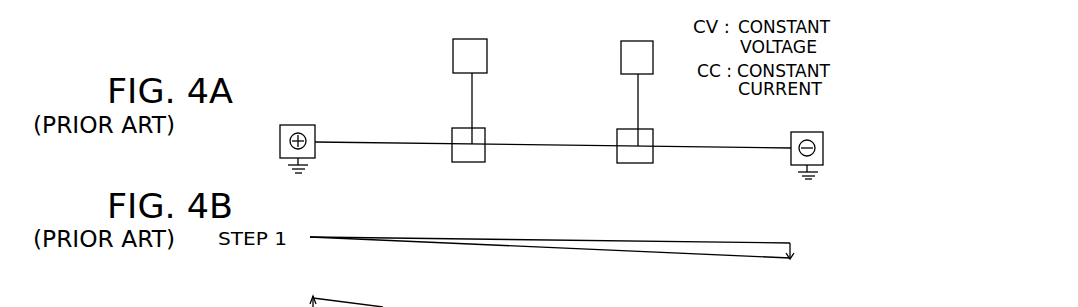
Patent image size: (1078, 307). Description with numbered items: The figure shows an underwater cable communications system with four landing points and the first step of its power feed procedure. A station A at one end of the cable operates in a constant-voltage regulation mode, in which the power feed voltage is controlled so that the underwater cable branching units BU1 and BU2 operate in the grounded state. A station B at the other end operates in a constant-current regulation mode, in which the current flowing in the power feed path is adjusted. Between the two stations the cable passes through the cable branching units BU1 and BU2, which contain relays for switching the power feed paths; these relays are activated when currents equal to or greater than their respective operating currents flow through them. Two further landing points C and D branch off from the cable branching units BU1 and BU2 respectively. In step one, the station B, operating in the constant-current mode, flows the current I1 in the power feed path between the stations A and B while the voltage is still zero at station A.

In FIG. 4A, the station A is at (285, 139).
In FIG. 4A, the station B is at (818, 145).
In FIG. 4A, the landing point C is at (470, 79).
In FIG. 4A, the landing point D is at (637, 81).
In FIG. 4A, the cable branching unit BU1 is at (470, 169).
In FIG. 4A, the cable branching unit BU2 is at (637, 170).
In FIG. 4B, the current I1 is at (559, 269).